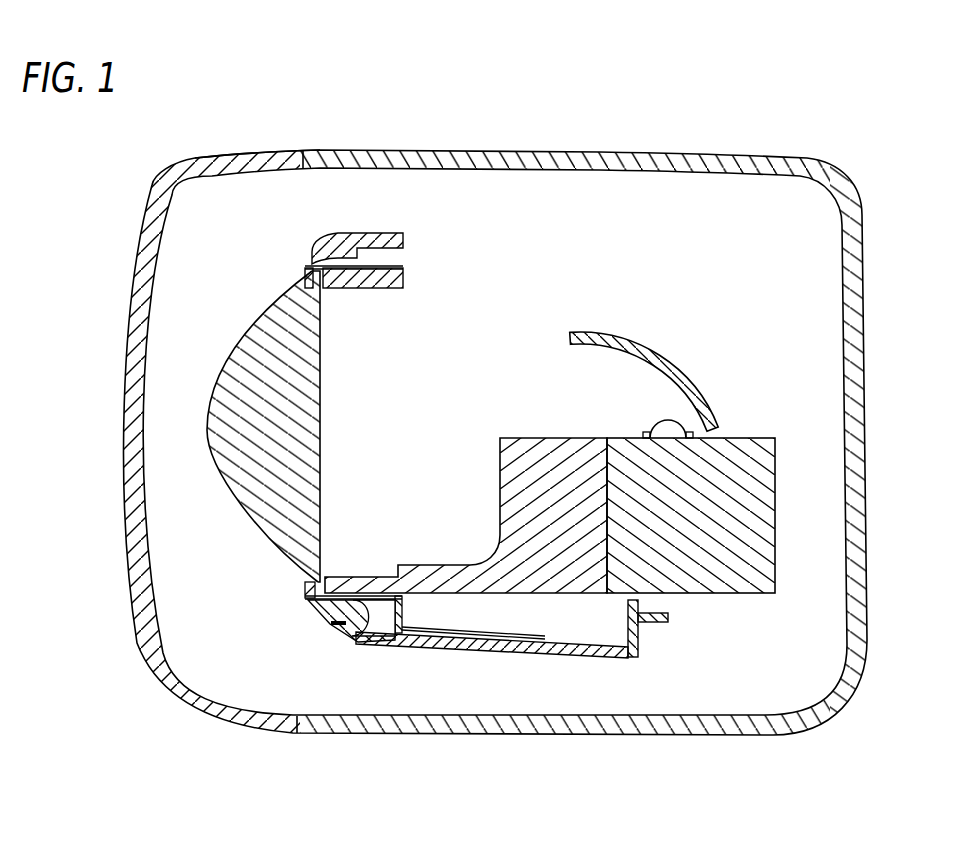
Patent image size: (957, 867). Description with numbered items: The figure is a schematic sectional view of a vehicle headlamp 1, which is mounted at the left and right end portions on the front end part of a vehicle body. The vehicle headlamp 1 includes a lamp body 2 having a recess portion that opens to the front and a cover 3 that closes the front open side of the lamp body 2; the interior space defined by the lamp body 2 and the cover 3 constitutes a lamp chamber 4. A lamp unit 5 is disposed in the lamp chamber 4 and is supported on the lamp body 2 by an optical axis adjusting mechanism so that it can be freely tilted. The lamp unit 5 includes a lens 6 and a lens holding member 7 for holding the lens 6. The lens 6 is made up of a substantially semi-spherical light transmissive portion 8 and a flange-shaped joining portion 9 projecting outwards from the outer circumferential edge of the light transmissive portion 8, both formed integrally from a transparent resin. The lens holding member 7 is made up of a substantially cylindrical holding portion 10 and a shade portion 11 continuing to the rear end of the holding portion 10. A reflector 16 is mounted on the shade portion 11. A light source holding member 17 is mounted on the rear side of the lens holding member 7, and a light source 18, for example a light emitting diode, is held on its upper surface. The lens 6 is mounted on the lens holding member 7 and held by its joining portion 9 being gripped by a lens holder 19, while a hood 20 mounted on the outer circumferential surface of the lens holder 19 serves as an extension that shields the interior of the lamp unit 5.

The vehicle headlamp 1 is at (507, 410).
The lamp body 2 is at (640, 157).
The cover 3 is at (208, 160).
The lamp chamber 4 is at (494, 262).
The lamp unit 5 is at (723, 250).
The lens 6 is at (194, 412).
The lens holding member 7 is at (624, 446).
The light transmissive portion 8 is at (232, 362).
The joining portion 9 is at (317, 268).
The holding portion 10 is at (358, 642).
The shade portion 11 is at (540, 548).
The reflector 16 is at (670, 363).
The light source holding member 17 is at (715, 592).
The light source 18 is at (677, 417).
The lens holder 19 is at (376, 624).
The hood 20 is at (468, 642).